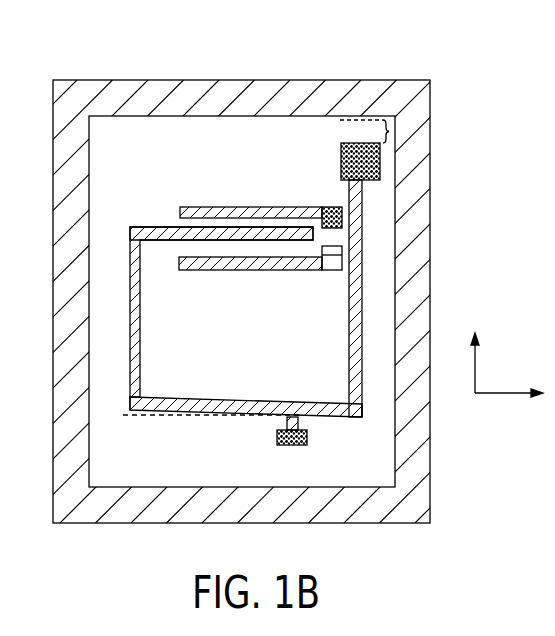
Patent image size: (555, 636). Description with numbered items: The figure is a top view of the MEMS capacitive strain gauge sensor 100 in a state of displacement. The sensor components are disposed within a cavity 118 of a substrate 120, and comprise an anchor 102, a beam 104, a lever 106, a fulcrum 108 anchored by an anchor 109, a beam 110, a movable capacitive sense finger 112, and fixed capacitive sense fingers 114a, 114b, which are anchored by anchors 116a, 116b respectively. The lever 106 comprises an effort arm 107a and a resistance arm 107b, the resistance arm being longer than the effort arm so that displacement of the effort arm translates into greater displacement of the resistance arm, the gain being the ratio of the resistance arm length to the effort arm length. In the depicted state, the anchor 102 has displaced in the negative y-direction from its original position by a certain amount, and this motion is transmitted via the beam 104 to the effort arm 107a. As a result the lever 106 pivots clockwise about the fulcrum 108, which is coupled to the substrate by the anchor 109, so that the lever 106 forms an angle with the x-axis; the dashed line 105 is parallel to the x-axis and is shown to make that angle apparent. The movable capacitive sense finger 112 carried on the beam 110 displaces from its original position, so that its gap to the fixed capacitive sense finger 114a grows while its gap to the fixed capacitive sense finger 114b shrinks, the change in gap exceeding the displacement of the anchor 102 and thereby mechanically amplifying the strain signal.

The capacitive strain gauge sensor 100 is at (277, 269).
The anchor 102 is at (380, 160).
The beam 104 is at (362, 200).
The dashed line 105 is at (132, 418).
The lever 106 is at (228, 356).
The effort arm 107a is at (325, 417).
The resistance arm 107b is at (168, 410).
The fulcrum 108 is at (288, 413).
The anchor 109 is at (280, 446).
The beam 110 is at (130, 297).
The movable capacitive sense finger 112 is at (222, 236).
The fixed capacitive sense finger 114a is at (253, 268).
The fixed capacitive sense finger 114b is at (277, 207).
The anchor 116a is at (322, 207).
The anchor 116b is at (342, 258).
The cavity 118 is at (137, 137).
The substrate 120 is at (72, 178).